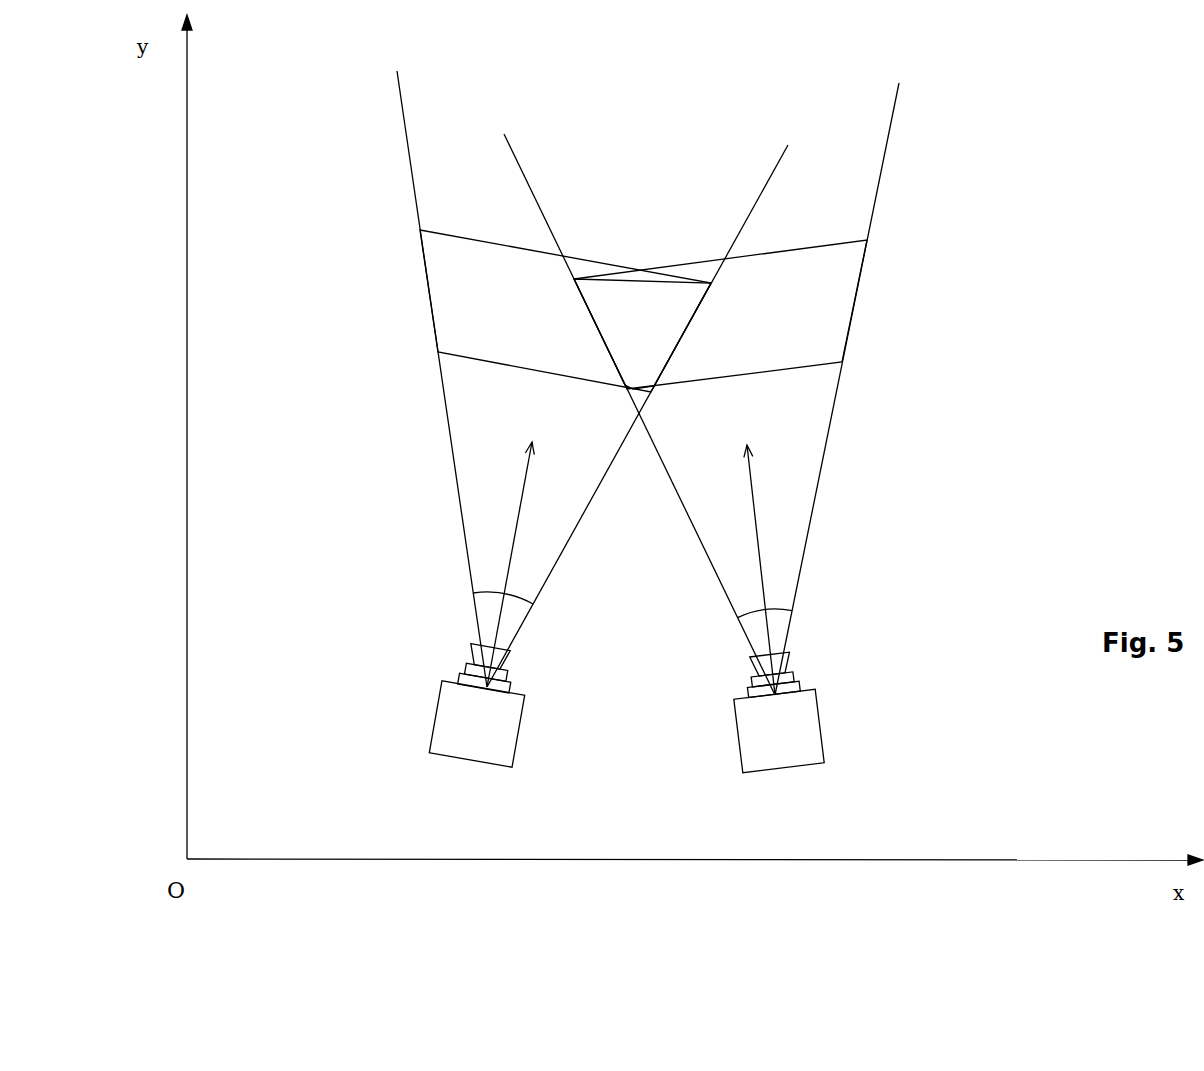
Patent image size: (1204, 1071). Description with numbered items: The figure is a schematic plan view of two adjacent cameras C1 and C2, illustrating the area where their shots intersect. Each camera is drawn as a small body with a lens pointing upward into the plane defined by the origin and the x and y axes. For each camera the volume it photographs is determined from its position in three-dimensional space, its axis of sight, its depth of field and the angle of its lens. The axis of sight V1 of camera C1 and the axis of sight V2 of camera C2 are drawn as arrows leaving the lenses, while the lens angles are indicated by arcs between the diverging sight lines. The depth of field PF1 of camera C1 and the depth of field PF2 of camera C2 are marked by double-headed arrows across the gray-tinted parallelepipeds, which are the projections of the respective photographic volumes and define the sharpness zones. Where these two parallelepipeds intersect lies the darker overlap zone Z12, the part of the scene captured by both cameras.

The camera C1 is at (460, 684).
The camera C2 is at (747, 693).
The axis of sight of the camera V1 is at (510, 552).
The axis of sight of the camera V2 is at (759, 556).
The depth of field PF1 is at (470, 239).
The depth of field PF2 is at (773, 252).
The overlap zone Z12 is at (638, 310).